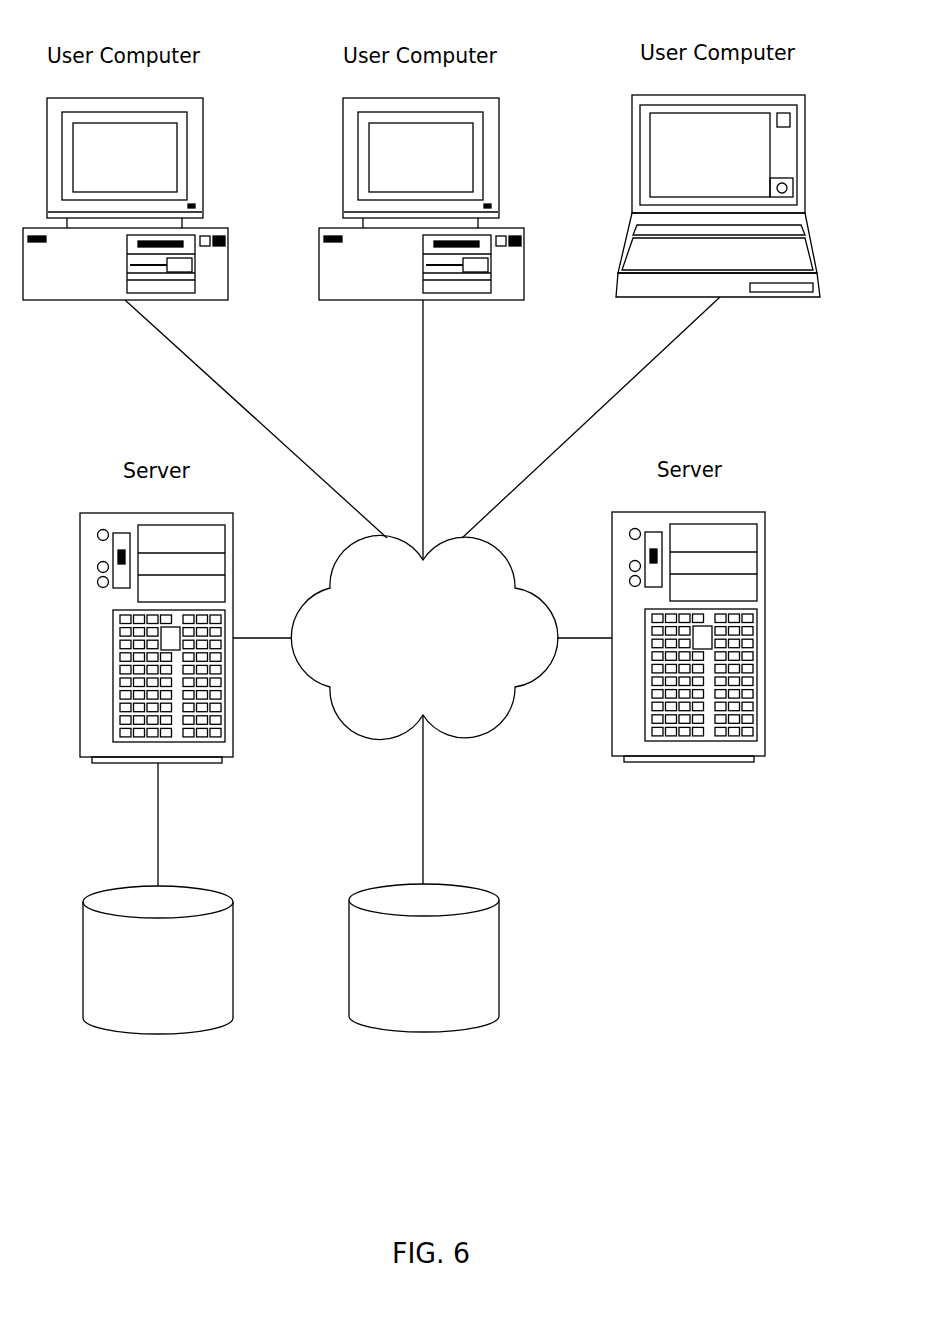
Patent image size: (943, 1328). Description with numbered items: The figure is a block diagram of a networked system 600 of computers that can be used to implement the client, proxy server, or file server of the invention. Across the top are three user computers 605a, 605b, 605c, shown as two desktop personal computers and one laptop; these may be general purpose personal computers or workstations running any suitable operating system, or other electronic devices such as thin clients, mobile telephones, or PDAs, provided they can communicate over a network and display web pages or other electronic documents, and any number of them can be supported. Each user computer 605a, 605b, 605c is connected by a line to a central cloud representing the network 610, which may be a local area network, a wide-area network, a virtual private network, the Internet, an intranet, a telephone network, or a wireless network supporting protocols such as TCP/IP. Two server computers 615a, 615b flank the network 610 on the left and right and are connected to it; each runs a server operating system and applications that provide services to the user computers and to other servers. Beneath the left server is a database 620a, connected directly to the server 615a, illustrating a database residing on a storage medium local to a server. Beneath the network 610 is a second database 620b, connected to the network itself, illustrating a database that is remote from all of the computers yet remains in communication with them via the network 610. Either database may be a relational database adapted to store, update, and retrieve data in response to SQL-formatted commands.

The user computer 605a is at (228, 248).
The user computer 605b is at (318, 250).
The user computer 605c is at (632, 197).
The network 610 is at (460, 737).
The server computer 615a is at (80, 638).
The server computer 615b is at (767, 636).
The database 620a is at (160, 1034).
The database 620b is at (425, 1032).
The system 600 is at (682, 1082).